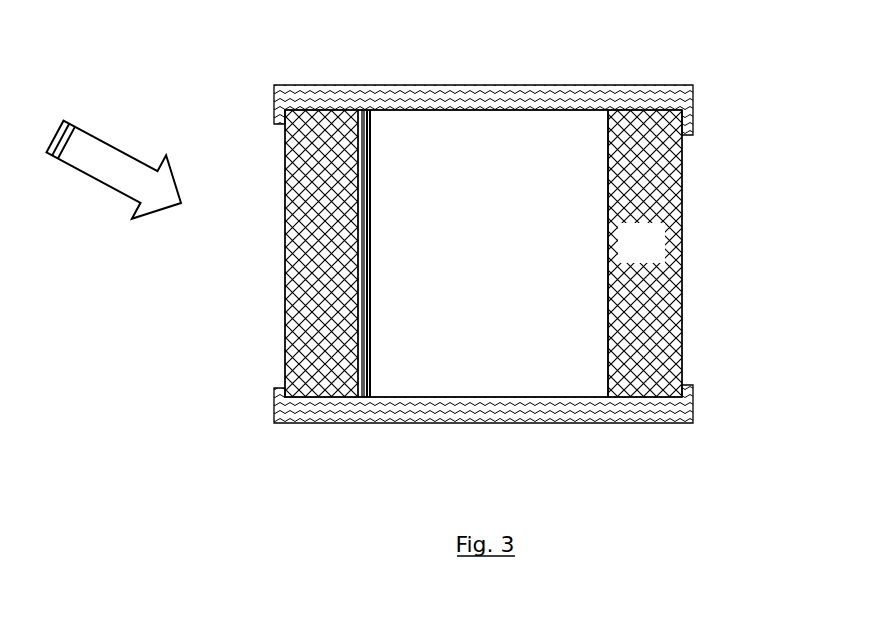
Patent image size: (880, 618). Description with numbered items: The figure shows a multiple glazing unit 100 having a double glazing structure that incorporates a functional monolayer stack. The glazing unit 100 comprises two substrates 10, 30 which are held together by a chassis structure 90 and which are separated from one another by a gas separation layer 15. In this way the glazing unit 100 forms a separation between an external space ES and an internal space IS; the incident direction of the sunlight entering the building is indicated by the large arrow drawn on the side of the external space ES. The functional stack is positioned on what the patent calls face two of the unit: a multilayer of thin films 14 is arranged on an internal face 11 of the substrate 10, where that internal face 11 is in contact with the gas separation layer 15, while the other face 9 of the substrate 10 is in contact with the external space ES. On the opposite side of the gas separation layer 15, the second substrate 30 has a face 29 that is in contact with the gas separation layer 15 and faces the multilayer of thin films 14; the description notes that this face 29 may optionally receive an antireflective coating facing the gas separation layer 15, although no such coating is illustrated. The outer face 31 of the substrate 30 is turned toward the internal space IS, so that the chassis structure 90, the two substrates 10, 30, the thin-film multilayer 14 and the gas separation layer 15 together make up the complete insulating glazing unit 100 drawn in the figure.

The multiple glazing unit 100 is at (175, 95).
The face of the substrate 9 is at (287, 367).
The substrate 10 is at (314, 376).
The internal face of the substrate 11 is at (363, 325).
The multilayer of thin films 14 is at (363, 398).
The gas separation layer 15 is at (462, 255).
The face of the substrate 29 is at (608, 355).
The substrate 30 is at (655, 252).
The exterior surface of second panel 31 is at (682, 320).
The chassis structure 90 is at (358, 110).
The external space ES is at (206, 279).
The internal space IS is at (730, 280).